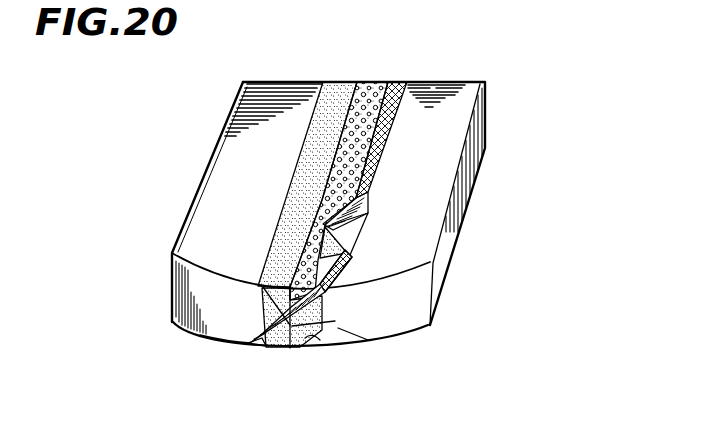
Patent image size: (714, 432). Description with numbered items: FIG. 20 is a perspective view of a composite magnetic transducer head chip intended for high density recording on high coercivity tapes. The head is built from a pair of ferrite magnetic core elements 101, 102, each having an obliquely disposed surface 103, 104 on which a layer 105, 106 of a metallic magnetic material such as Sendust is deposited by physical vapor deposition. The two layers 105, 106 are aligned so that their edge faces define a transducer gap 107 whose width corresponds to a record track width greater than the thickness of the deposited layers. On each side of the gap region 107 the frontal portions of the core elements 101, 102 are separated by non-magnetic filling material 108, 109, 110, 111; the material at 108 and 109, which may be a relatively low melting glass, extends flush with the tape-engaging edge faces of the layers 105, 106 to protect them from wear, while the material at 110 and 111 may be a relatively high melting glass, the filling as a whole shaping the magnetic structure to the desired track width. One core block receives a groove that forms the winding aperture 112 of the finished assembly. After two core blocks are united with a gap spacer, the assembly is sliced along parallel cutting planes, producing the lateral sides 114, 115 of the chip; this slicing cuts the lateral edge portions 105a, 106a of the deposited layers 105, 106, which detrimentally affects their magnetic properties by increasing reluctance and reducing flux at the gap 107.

The magnetic core element 101 is at (418, 297).
The magnetic core element 102 is at (183, 302).
The obliquely disposed surface 103 is at (335, 321).
The obliquely disposed surface 104 is at (276, 330).
The layer of metallic magnetic material 105 is at (305, 312).
The lateral edge portion 105a is at (345, 272).
The layer of metallic magnetic material 106 is at (200, 335).
The lateral edge portion 106a is at (255, 345).
The transducer gap 107 is at (368, 340).
The non-magnetic filling material 108 is at (350, 255).
The non-magnetic filling material 109 is at (282, 348).
The non-magnetic filling material 110 is at (320, 340).
The non-magnetic filling material 111 is at (277, 252).
The winding aperture 112 is at (380, 212).
The lateral side 114 is at (430, 95).
The lateral side 115 is at (478, 172).